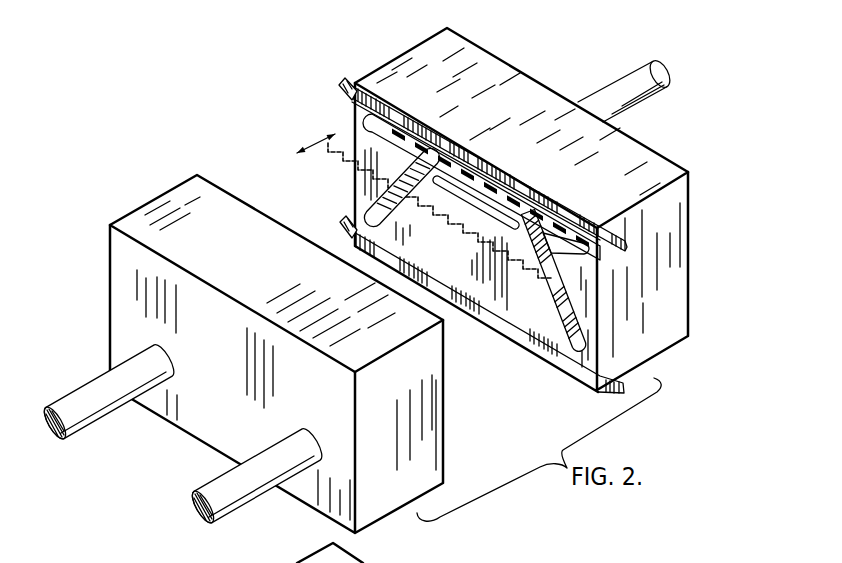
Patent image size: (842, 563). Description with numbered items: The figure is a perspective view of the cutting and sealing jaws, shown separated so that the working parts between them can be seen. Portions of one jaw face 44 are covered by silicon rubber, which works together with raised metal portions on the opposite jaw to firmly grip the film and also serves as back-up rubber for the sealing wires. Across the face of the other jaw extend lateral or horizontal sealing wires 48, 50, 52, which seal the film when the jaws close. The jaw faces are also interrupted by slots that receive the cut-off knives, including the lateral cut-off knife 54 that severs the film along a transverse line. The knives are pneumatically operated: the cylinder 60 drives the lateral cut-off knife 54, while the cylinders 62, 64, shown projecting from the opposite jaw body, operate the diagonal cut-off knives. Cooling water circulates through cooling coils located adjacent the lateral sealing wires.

The face 44 is at (511, 343).
The sealing wire 48 is at (341, 82).
The sealing wire 50 is at (462, 203).
The sealing wire 52 is at (340, 222).
The lateral cut-off knife 54 is at (360, 117).
The cylinder 60 is at (618, 82).
The cylinder 62 is at (108, 403).
The cylinder 64 is at (210, 485).